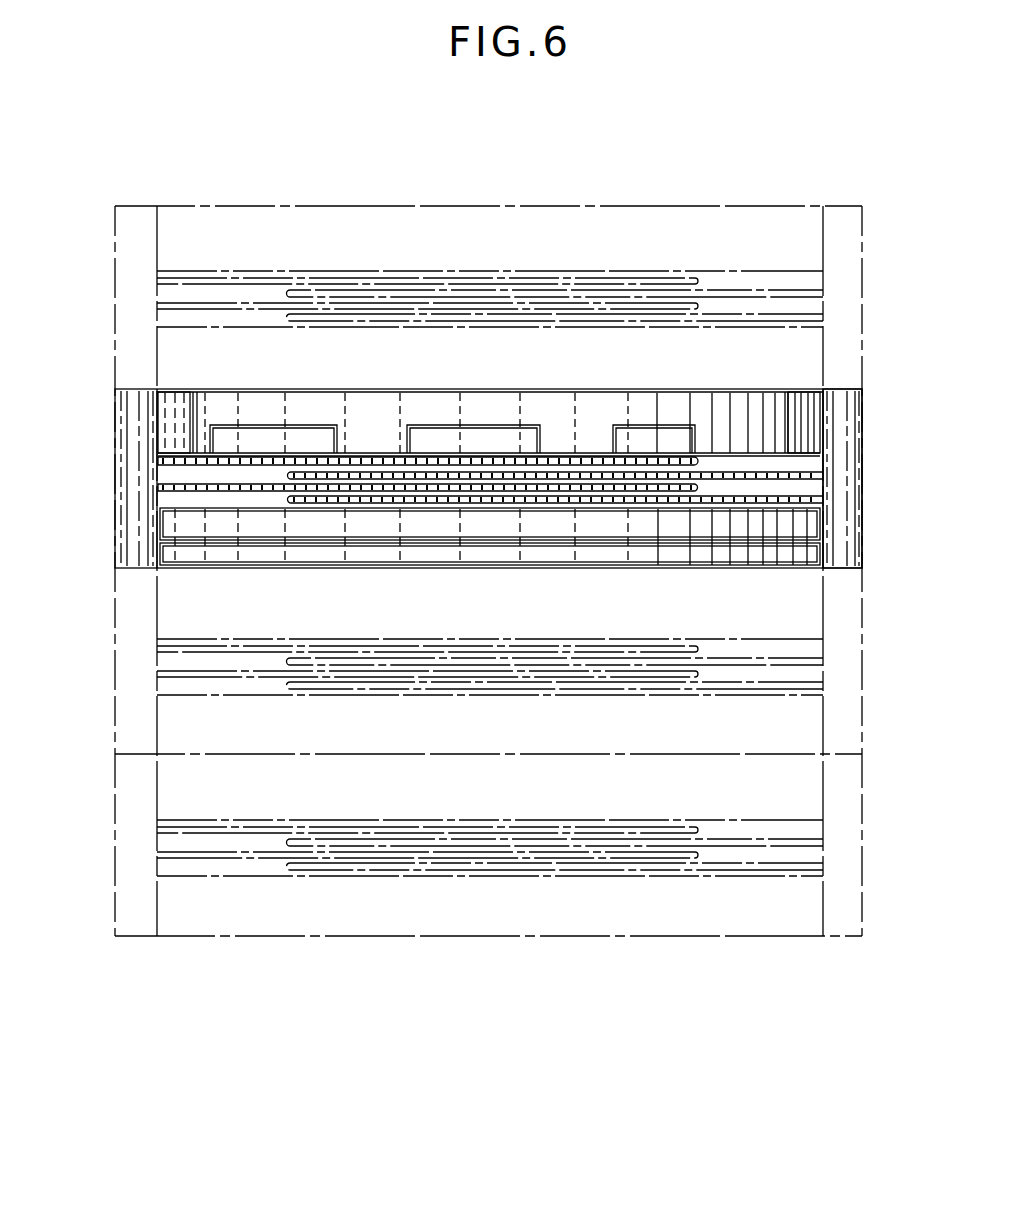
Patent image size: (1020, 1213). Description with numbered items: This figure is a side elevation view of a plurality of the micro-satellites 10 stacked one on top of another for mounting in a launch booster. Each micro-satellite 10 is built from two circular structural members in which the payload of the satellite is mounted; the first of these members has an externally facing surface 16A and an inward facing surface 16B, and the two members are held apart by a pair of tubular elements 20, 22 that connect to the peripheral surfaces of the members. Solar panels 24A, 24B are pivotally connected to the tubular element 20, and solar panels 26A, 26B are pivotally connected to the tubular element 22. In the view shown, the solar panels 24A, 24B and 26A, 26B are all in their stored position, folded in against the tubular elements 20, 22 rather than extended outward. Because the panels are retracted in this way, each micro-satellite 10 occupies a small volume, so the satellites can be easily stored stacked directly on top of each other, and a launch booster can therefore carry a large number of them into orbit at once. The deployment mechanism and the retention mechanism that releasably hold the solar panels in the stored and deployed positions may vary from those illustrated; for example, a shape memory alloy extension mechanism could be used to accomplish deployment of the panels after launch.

The micro-satellite 10 is at (510, 200).
The externally facing surface 16A is at (183, 392).
The inward facing surface 16B is at (183, 570).
The tubular element 20 is at (104, 513).
The tubular element 22 is at (872, 540).
The solar panel 24A is at (177, 467).
The solar panel 24B is at (183, 491).
The solar panel 26A is at (808, 469).
The solar panel 26B is at (806, 495).